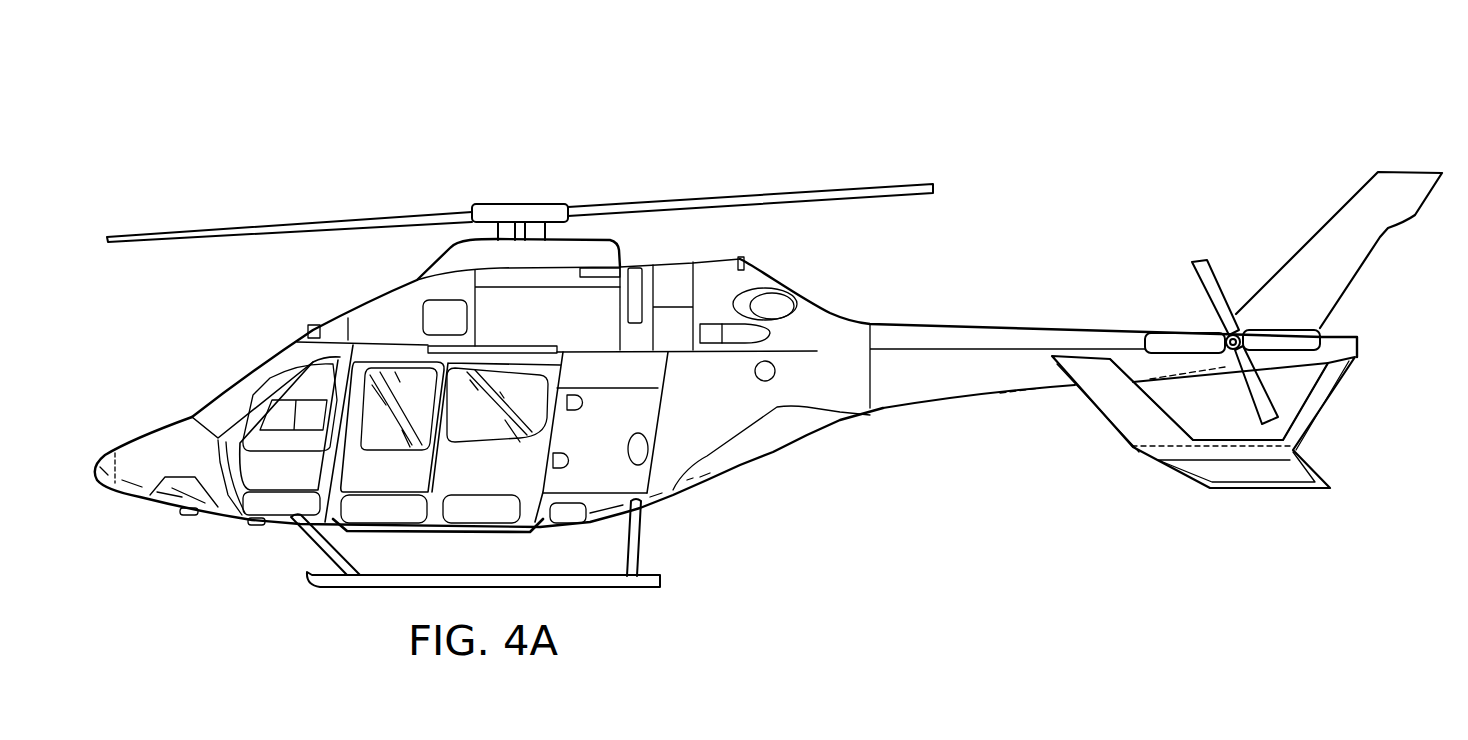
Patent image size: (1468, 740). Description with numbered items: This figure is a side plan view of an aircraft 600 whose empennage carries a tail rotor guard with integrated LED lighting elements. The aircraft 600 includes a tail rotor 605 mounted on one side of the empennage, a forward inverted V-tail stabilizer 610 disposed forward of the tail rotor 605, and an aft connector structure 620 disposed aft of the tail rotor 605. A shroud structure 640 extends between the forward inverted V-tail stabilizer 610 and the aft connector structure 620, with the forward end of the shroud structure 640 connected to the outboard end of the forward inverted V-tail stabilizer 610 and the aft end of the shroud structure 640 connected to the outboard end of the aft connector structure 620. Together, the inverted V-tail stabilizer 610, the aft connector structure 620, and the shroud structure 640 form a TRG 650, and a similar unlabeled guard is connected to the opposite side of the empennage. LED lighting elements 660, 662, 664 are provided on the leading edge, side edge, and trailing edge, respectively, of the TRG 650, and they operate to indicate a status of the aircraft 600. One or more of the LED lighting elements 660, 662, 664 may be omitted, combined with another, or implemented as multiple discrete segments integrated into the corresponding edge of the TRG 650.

The aircraft 600 is at (1019, 104).
The tail rotor 605 is at (1197, 321).
The forward inverted V-tail stabilizer 610 is at (1138, 437).
The aft connector structure 620 is at (1303, 397).
The shroud structure 640 is at (1232, 470).
The TRG 650 is at (1134, 480).
The LED lighting element 660 is at (1122, 446).
The LED lighting element 662 is at (1272, 490).
The LED lighting element 664 is at (1323, 408).